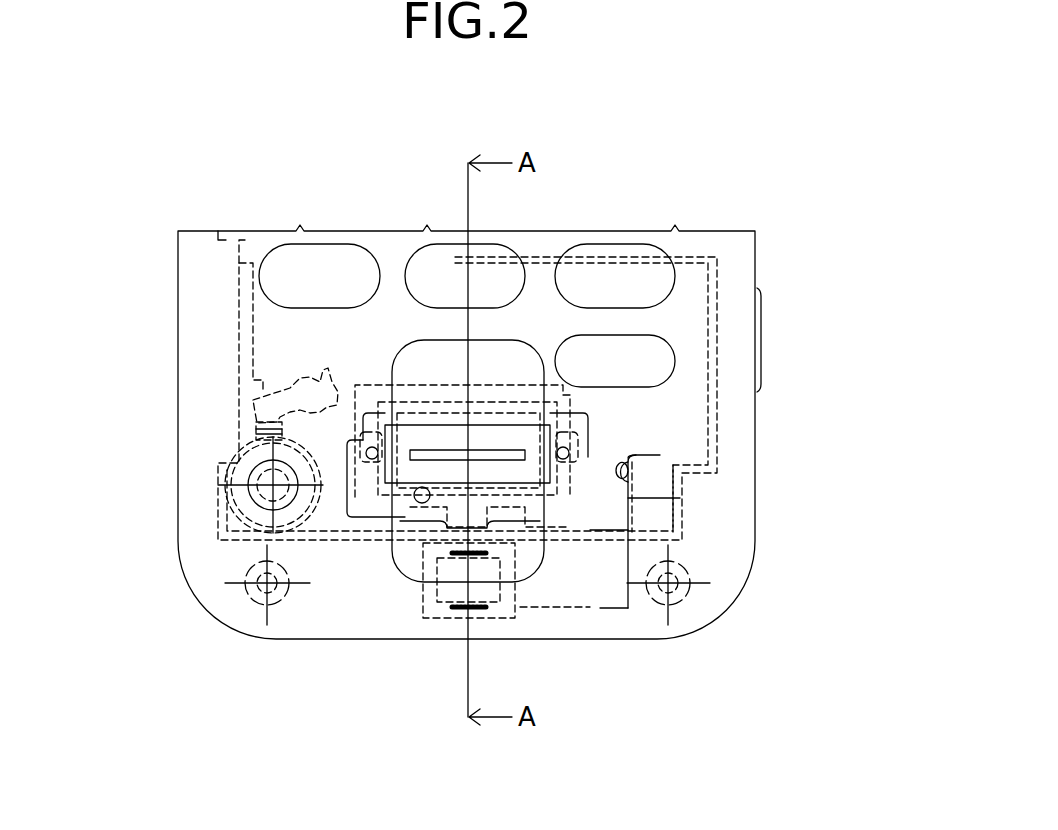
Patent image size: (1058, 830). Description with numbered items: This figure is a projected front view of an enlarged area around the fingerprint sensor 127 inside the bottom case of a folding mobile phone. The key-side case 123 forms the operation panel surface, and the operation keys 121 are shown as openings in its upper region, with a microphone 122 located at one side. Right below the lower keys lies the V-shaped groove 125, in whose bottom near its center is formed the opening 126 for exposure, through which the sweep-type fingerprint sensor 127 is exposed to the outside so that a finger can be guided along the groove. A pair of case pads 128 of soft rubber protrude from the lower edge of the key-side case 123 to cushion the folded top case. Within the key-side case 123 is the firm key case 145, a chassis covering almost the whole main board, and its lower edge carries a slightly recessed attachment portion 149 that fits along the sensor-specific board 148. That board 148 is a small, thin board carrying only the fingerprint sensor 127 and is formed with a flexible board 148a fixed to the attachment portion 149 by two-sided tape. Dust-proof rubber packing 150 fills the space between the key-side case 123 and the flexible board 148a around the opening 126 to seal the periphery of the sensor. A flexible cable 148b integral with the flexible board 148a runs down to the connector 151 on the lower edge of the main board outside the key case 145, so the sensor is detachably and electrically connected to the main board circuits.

The operation keys 121 is at (428, 272).
The microphone 122 is at (227, 498).
The key-side case 123 is at (215, 316).
The V-shaped groove 125 is at (520, 357).
The opening for exposure 126 is at (418, 503).
The fingerprint sensor 127 is at (493, 455).
The case pads 128 is at (252, 602).
The key case 145 is at (717, 347).
The sensor-specific board 148 is at (628, 522).
The flexible board 148a is at (680, 498).
The flexible cable 148b is at (600, 612).
The attachment portion 149 is at (660, 455).
The dust-proof rubber packing 150 is at (568, 450).
The connector 151 is at (440, 606).